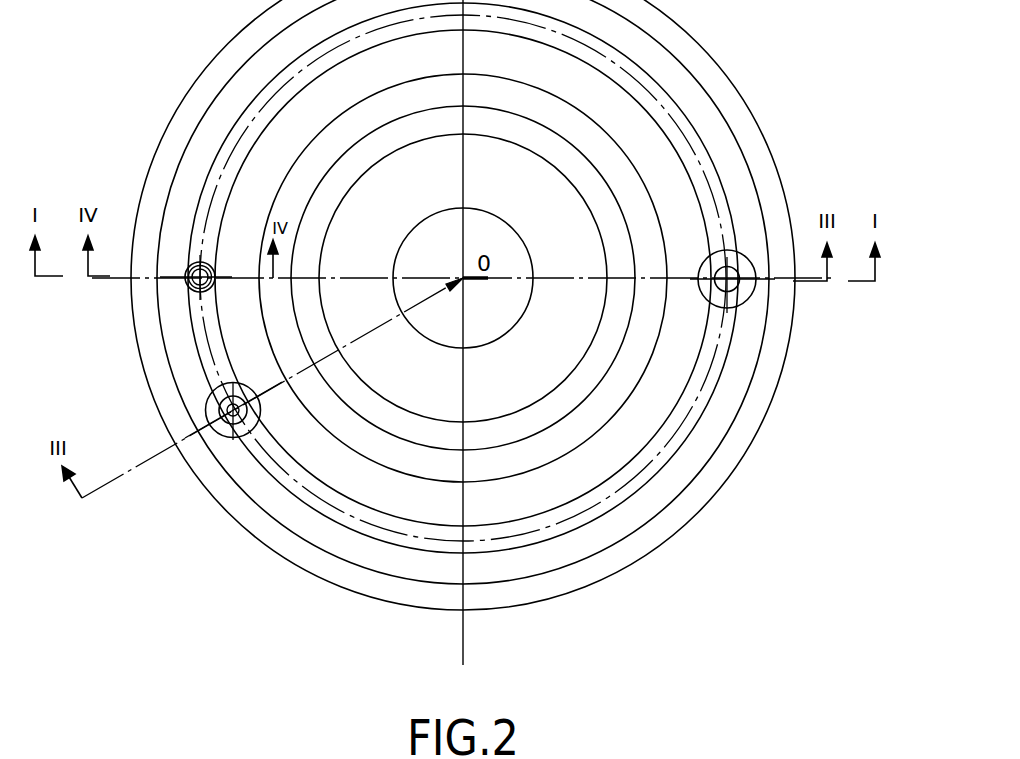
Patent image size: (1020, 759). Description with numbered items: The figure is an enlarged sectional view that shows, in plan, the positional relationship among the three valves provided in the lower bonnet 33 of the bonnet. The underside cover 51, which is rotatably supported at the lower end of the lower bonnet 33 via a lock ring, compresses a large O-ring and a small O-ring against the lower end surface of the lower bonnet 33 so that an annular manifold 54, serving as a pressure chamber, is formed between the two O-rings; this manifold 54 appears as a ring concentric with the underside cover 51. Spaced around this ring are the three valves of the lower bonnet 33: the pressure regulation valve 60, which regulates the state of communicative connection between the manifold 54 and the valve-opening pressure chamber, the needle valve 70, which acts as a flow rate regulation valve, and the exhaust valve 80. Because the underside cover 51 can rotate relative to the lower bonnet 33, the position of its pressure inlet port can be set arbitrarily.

The needle valve 70 is at (178, 262).
The pressure regulation valve 60 is at (745, 245).
The exhaust valve 80 is at (232, 452).
The annular manifold 54 is at (688, 397).
The underside cover 51 is at (463, 337).
The lower bonnet 33 is at (665, 530).